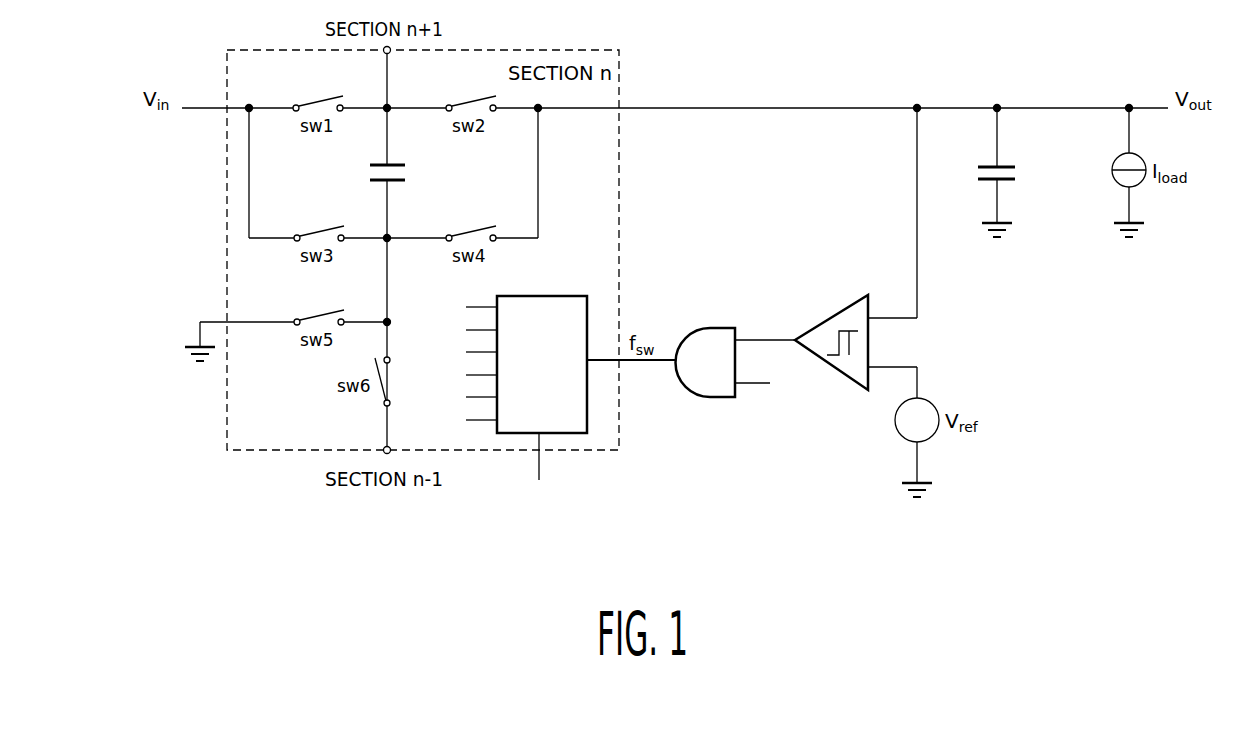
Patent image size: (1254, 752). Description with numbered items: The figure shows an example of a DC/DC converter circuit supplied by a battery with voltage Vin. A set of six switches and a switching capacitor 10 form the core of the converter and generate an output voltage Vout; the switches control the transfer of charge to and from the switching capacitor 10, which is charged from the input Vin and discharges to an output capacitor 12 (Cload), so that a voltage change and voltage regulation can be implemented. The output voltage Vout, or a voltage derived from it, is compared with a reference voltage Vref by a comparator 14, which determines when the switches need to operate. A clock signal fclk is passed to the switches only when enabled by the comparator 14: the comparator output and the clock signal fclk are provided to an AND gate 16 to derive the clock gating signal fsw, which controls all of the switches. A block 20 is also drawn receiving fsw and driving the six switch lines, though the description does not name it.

The switching capacitor 10 is at (370, 162).
The output capacitor 12 is at (986, 180).
The comparator 14 is at (868, 295).
The AND gate 16 is at (717, 328).
The ratio control block 20 is at (555, 296).